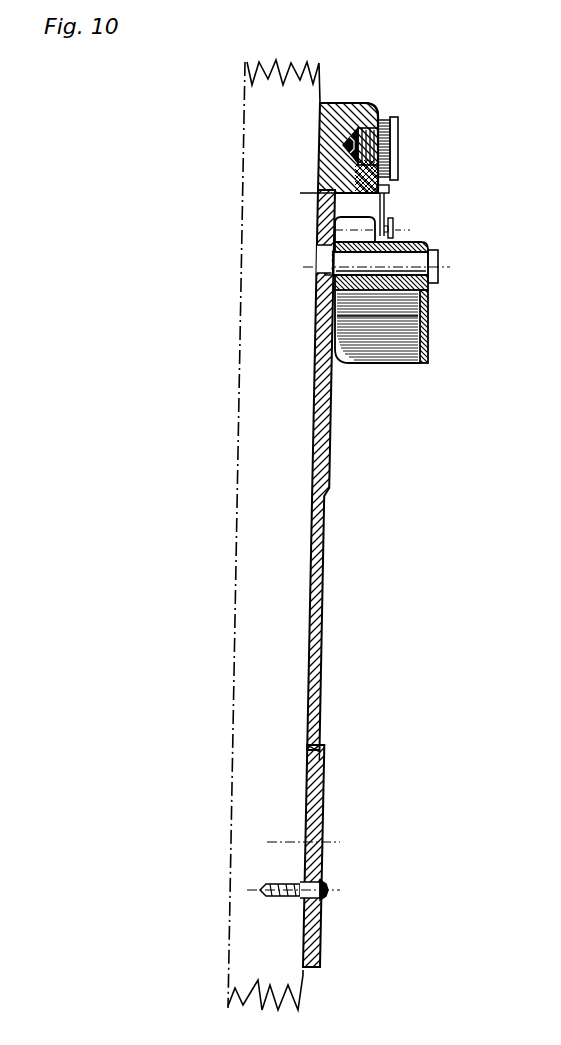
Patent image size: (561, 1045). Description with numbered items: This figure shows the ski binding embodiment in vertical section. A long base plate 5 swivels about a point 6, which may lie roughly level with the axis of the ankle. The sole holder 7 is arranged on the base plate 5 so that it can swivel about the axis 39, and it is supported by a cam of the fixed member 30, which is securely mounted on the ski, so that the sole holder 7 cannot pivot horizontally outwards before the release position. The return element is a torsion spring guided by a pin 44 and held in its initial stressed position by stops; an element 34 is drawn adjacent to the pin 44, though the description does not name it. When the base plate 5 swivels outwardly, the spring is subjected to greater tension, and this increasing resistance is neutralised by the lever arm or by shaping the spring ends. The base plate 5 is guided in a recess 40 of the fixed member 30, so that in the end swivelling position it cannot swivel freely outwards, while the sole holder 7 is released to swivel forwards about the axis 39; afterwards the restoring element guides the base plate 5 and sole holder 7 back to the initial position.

The recess 40 is at (322, 193).
The fixed member 30 is at (373, 111).
The pin 44 is at (387, 142).
The knurled disc 34 is at (401, 125).
The sole holder 7 is at (424, 288).
The axis 39 is at (438, 263).
The base plate 5 is at (330, 447).
The point 6 is at (322, 812).